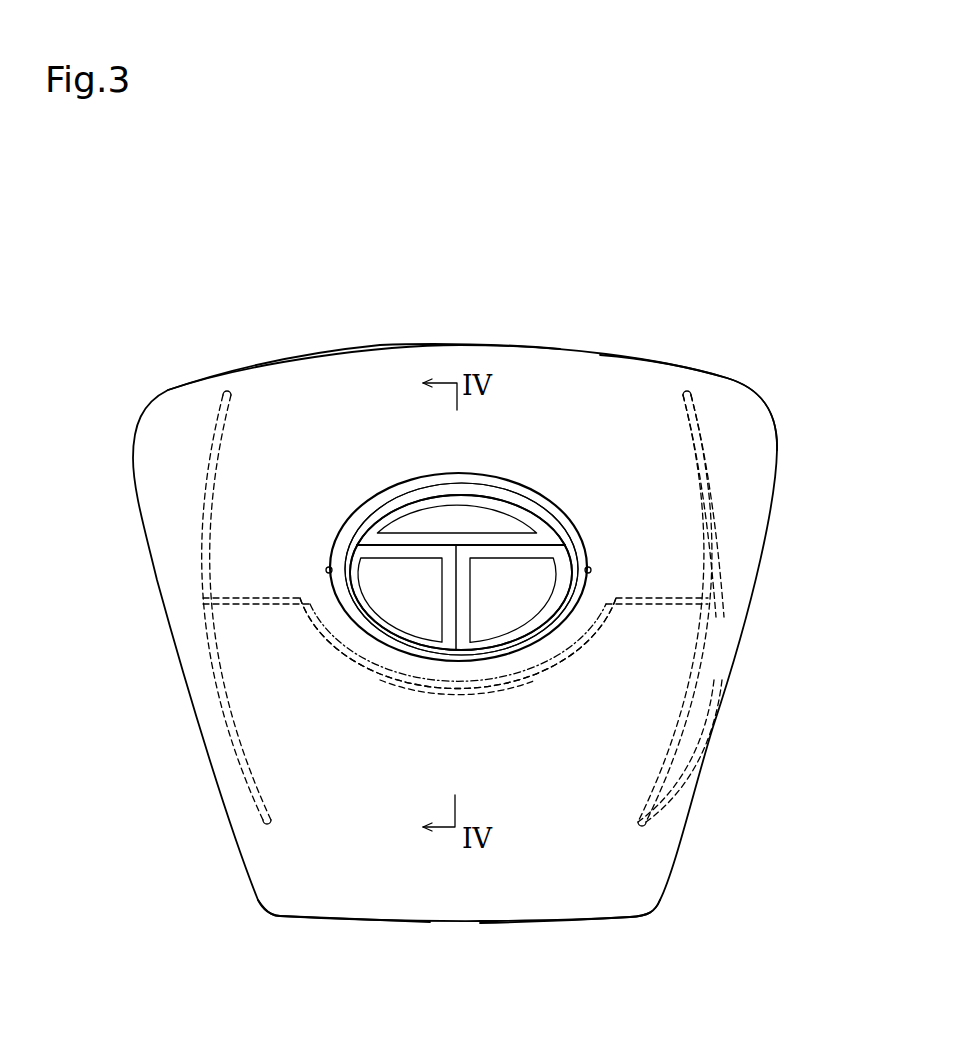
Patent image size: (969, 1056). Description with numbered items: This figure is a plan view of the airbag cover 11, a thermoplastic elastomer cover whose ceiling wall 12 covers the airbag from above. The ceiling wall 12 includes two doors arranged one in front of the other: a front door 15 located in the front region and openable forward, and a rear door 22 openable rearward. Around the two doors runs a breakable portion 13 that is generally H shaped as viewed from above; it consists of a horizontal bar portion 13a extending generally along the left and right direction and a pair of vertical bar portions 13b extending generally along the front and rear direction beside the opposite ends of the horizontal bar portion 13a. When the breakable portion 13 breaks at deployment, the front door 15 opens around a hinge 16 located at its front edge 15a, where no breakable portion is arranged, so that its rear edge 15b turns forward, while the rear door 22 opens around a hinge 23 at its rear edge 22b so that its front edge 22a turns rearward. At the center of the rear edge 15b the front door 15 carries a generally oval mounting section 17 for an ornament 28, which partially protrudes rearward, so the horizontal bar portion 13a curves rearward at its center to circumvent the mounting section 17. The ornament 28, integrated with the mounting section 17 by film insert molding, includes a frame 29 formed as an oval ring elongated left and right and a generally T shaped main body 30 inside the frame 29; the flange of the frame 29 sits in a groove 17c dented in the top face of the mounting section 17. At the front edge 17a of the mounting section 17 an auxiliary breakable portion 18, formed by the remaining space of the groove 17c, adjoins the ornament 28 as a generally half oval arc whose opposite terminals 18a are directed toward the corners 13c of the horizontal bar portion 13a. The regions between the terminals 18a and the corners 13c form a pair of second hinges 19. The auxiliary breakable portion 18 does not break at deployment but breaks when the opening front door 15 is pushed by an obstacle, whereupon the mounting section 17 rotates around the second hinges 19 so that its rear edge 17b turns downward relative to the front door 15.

The airbag cover 11 is at (658, 322).
The ceiling wall 12 is at (728, 380).
The breakable portion 13 is at (494, 775).
The horizontal bar portion 13a is at (370, 677).
The vertical bar portions 13b is at (252, 790).
The corners of the horizontal bar portion 13c is at (300, 598).
The front door 15 is at (680, 476).
The front edge of the front door 15a is at (322, 383).
The rear edge of the front door 15b is at (277, 593).
The hinge 16 is at (517, 382).
The mounting section 17 is at (456, 585).
The front edge of the mounting section 17a is at (540, 493).
The rear edge of the mounting section 17b is at (417, 673).
The groove 17c is at (368, 503).
The auxiliary breakable portion 18 is at (461, 531).
The terminals of the auxiliary breakable portion 18a is at (327, 567).
The second hinges 19 is at (323, 590).
The rear door 22 is at (655, 795).
The front edge of the rear door 22a is at (680, 617).
The rear edge of the rear door 22b is at (575, 820).
The hinge 23 is at (388, 817).
The ornament 28 is at (517, 492).
The frame 29 is at (475, 652).
The main body 30 is at (463, 530).